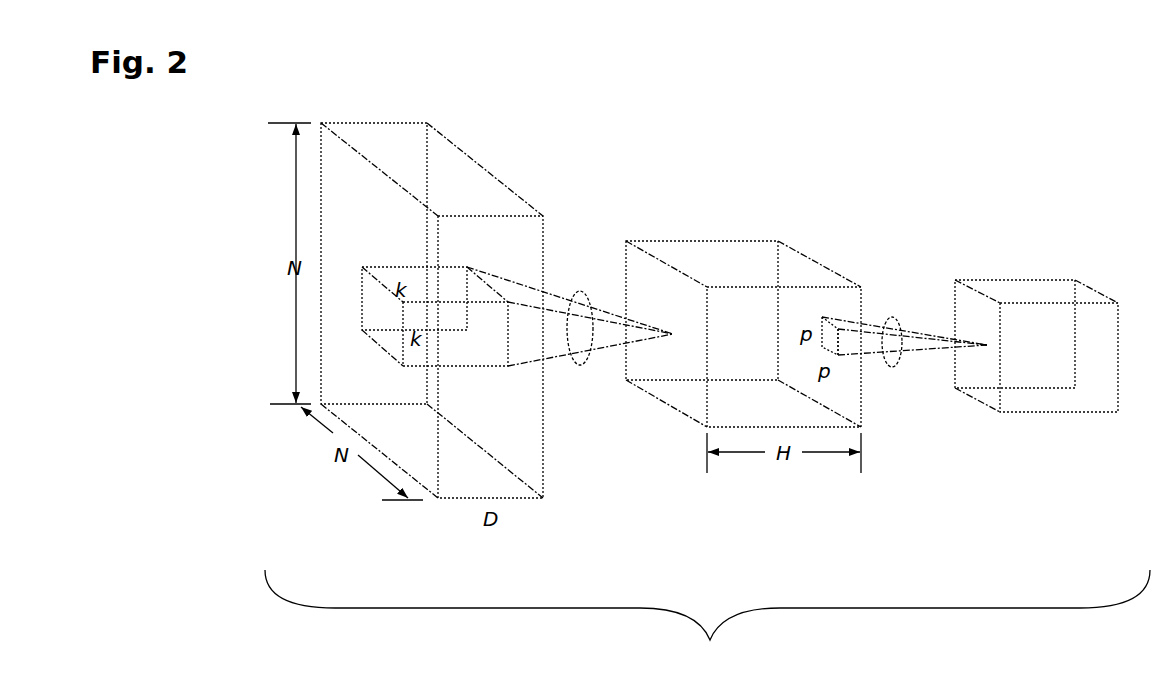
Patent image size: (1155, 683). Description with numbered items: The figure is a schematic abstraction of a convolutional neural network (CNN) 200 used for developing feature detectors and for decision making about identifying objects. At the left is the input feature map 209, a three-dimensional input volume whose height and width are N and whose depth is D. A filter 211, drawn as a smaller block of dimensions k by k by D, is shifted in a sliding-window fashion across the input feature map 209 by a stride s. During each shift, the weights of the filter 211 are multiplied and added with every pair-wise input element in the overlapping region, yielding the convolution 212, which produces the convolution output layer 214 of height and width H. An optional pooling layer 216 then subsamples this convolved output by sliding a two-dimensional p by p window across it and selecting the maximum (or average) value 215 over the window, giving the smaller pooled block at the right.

The convolutional neural network (CNN) 200 is at (707, 620).
The input feature map 209 is at (464, 157).
The filter 211 is at (387, 325).
The convolution 212 is at (580, 291).
The convolution output layer 214 is at (785, 257).
The maximum (or average) value 215 is at (890, 317).
The pooling layer 216 is at (1055, 288).